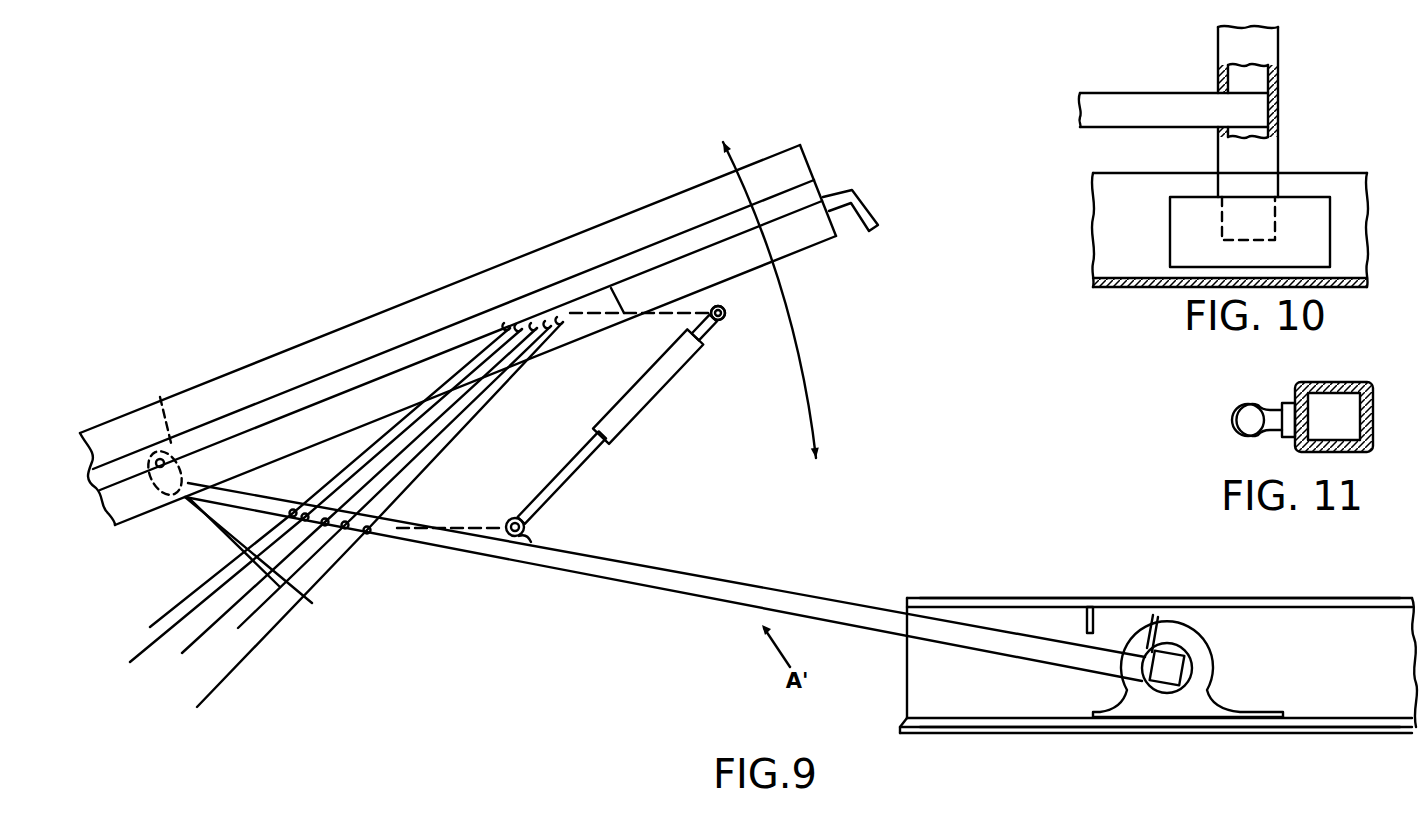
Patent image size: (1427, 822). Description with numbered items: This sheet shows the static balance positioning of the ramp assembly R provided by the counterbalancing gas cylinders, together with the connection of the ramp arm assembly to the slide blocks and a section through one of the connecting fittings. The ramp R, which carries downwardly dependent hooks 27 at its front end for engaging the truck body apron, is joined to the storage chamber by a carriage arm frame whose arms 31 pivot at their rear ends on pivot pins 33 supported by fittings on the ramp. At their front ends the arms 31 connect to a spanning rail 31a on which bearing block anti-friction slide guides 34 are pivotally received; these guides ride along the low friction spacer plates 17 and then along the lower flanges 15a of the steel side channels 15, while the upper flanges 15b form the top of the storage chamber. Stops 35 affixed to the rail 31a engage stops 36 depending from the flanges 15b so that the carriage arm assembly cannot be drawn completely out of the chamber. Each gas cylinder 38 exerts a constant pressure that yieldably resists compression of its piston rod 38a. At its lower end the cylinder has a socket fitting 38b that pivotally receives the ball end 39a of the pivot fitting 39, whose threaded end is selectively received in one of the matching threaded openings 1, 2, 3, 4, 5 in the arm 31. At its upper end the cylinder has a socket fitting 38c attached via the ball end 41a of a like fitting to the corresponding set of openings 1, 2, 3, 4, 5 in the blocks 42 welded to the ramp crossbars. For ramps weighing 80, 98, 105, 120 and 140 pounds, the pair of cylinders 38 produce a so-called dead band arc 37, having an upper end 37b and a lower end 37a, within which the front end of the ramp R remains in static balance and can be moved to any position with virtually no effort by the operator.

In FIG. 9, the ramp assembly R is at (387, 308).
In FIG. 9, the first opening of the sets of openings 1 is at (288, 515).
In FIG. 9, the second opening of the sets of openings 2 is at (302, 522).
In FIG. 9, the third opening of the sets of openings 3 is at (321, 527).
In FIG. 9, the fourth opening of the sets of openings 4 is at (343, 530).
In FIG. 9, the fifth opening of the sets of openings 5 is at (367, 535).
In FIG. 9, the side channel 15 is at (1356, 612).
In FIG. 10, the side channel 15 is at (1336, 174).
In FIG. 9, the lower flange 15a is at (1331, 728).
In FIG. 9, the upper flange 15b is at (1302, 596).
In FIG. 9, the spacer plate 17 is at (1153, 717).
In FIG. 9, the hook 27 is at (875, 205).
In FIG. 9, the arm 31 is at (792, 583).
In FIG. 10, the arm 31 is at (1145, 94).
In FIG. 11, the arm 31 is at (1343, 383).
In FIG. 9, the spanning rail 31a is at (1180, 651).
In FIG. 10, the spanning rail 31a is at (1280, 78).
In FIG. 9, the pivot pin 33 is at (164, 436).
In FIG. 9, the slide guide 34 is at (1203, 686).
In FIG. 10, the slide guide 34 is at (1325, 225).
In FIG. 9, the stop 35 is at (1153, 614).
In FIG. 9, the stop 36 is at (1086, 610).
In FIG. 9, the arc 37 is at (805, 340).
In FIG. 9, the lower end of arc 37a is at (818, 460).
In FIG. 9, the upper end of arc 37b is at (734, 126).
In FIG. 9, the gas cylinder 38 is at (647, 397).
In FIG. 9, the piston rod 38a is at (567, 477).
In FIG. 9, the socket fitting 38b is at (523, 540).
In FIG. 9, the socket fitting 38c is at (719, 305).
In FIG. 11, the ball fitting 39 is at (1233, 397).
In FIG. 9, the ball end 39a is at (511, 517).
In FIG. 11, the ball end 39a is at (1237, 426).
In FIG. 9, the ball end 41a is at (723, 320).
In FIG. 9, the block 42 is at (622, 303).
In FIG. 9, the eighty pound ramp weight 80 is at (310, 489).
In FIG. 9, the ninety-eight pound ramp weight 98 is at (308, 505).
In FIG. 9, the one hundred five pound ramp weight 105 is at (336, 503).
In FIG. 9, the one hundred twenty pound ramp weight 120 is at (375, 493).
In FIG. 9, the one hundred forty pound ramp weight 140 is at (363, 527).